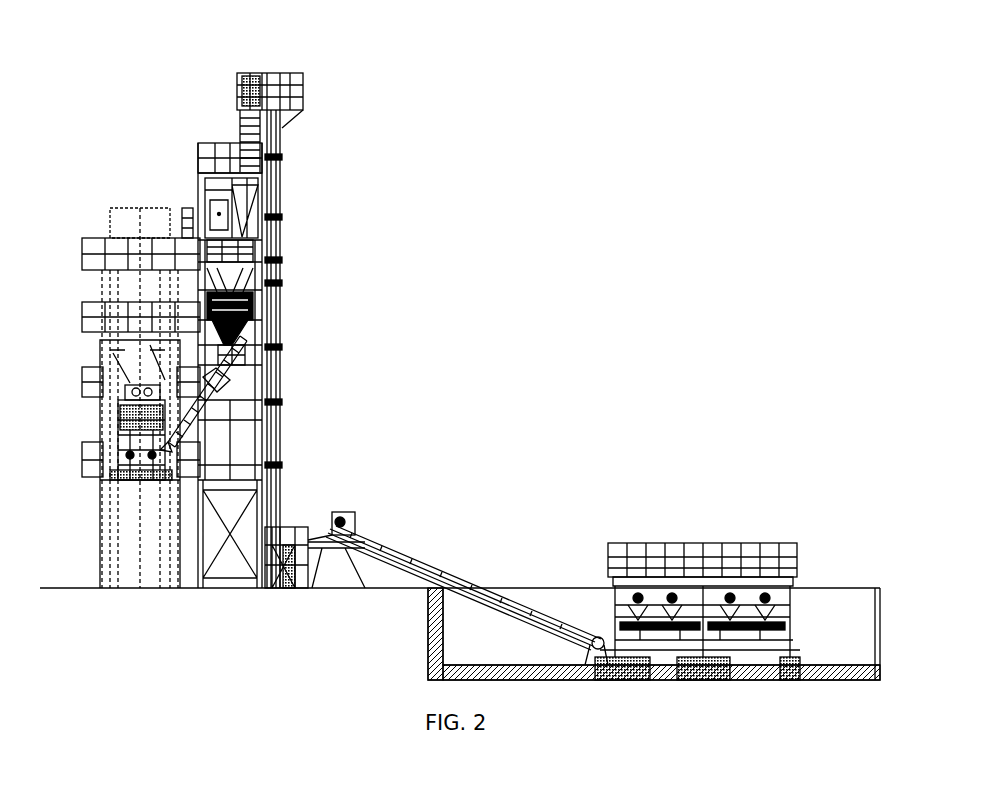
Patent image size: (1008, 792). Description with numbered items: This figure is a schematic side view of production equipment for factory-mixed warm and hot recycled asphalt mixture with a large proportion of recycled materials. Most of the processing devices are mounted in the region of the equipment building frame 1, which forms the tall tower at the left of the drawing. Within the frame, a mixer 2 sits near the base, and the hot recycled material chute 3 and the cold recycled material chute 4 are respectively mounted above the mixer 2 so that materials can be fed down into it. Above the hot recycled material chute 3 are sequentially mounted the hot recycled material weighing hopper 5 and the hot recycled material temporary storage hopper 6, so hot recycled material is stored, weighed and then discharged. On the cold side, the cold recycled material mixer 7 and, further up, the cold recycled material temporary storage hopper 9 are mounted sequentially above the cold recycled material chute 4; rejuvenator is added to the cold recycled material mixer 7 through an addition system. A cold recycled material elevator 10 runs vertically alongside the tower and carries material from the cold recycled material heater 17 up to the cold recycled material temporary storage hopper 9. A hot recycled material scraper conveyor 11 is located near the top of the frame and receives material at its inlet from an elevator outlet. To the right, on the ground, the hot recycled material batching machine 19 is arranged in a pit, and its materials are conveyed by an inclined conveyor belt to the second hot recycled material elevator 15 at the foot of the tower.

The equipment building frame 1 is at (117, 215).
The mixer 2 is at (103, 443).
The hot recycled material chute 3 is at (195, 422).
The cold recycled material chute 4 is at (217, 385).
The hot recycled material weighing hopper 5 is at (240, 337).
The hot recycled material temporary storage hopper 6 is at (267, 257).
The cold recycled material mixer 7 is at (260, 317).
The cold recycled material temporary storage hopper 9 is at (247, 217).
The cold recycled material elevator 10 is at (280, 403).
The hot recycled material scraper conveyor 11 is at (207, 203).
The second hot recycled material elevator 15 is at (280, 527).
The cold recycled material heater 17 is at (313, 592).
The hot recycled material batching machine 19 is at (677, 543).